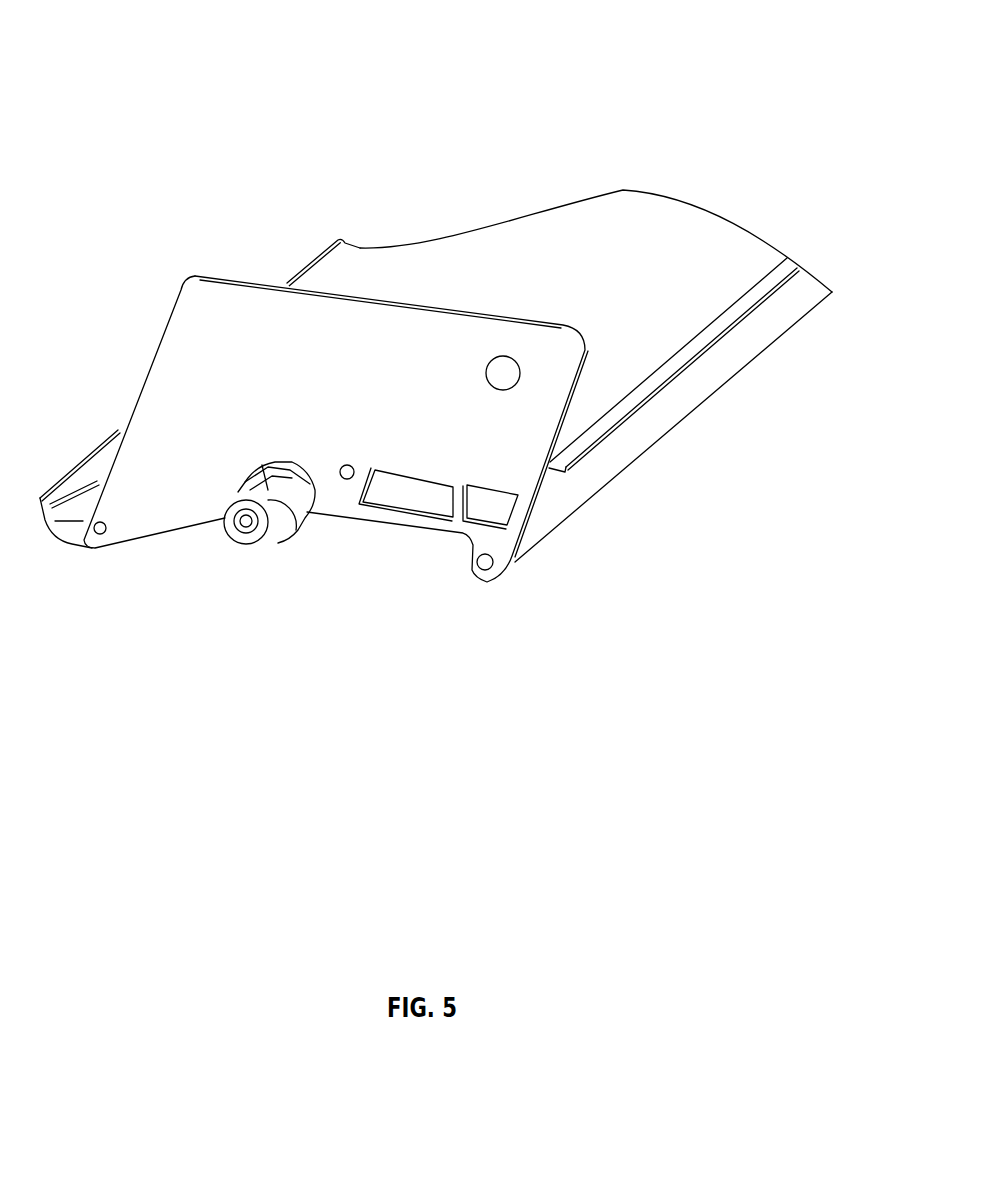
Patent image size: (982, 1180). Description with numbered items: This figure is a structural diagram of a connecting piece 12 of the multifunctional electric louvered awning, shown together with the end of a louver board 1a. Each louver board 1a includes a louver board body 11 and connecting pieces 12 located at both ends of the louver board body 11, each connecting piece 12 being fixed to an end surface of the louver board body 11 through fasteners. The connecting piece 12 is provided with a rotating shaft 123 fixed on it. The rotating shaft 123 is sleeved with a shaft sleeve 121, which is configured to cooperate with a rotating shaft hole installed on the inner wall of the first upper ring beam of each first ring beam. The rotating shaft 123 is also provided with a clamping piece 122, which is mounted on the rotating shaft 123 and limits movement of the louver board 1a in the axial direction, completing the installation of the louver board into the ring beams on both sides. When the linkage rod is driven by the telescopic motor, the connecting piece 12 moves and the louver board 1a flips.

The louver board 1a is at (486, 205).
The louver board body 11 is at (635, 285).
The connecting piece 12 is at (205, 228).
The shaft sleeve 121 is at (287, 540).
The clamping piece 122 is at (303, 467).
The rotating shaft 123 is at (240, 543).